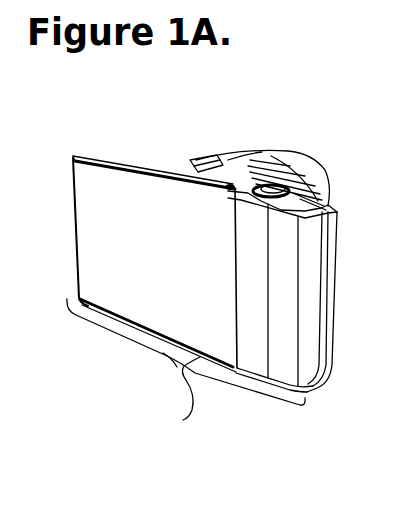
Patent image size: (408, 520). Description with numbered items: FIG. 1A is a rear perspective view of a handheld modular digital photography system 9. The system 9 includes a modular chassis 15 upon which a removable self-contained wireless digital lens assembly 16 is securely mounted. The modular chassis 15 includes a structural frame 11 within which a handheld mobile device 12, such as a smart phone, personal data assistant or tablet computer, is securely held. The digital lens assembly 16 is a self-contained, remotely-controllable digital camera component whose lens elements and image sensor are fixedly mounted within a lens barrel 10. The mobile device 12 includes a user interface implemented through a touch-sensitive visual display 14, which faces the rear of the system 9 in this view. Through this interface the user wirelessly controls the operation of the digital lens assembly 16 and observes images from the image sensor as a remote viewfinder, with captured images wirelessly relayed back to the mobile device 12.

The handheld modular digital photography system 9 is at (148, 134).
The lens barrel 10 is at (298, 146).
The structural frame 11 is at (159, 362).
The handheld mobile device 12 is at (186, 374).
The touch-sensitive visual display 14 is at (96, 252).
The modular chassis 15 is at (347, 347).
The removable self-contained wireless digital lens assembly 16 is at (332, 172).